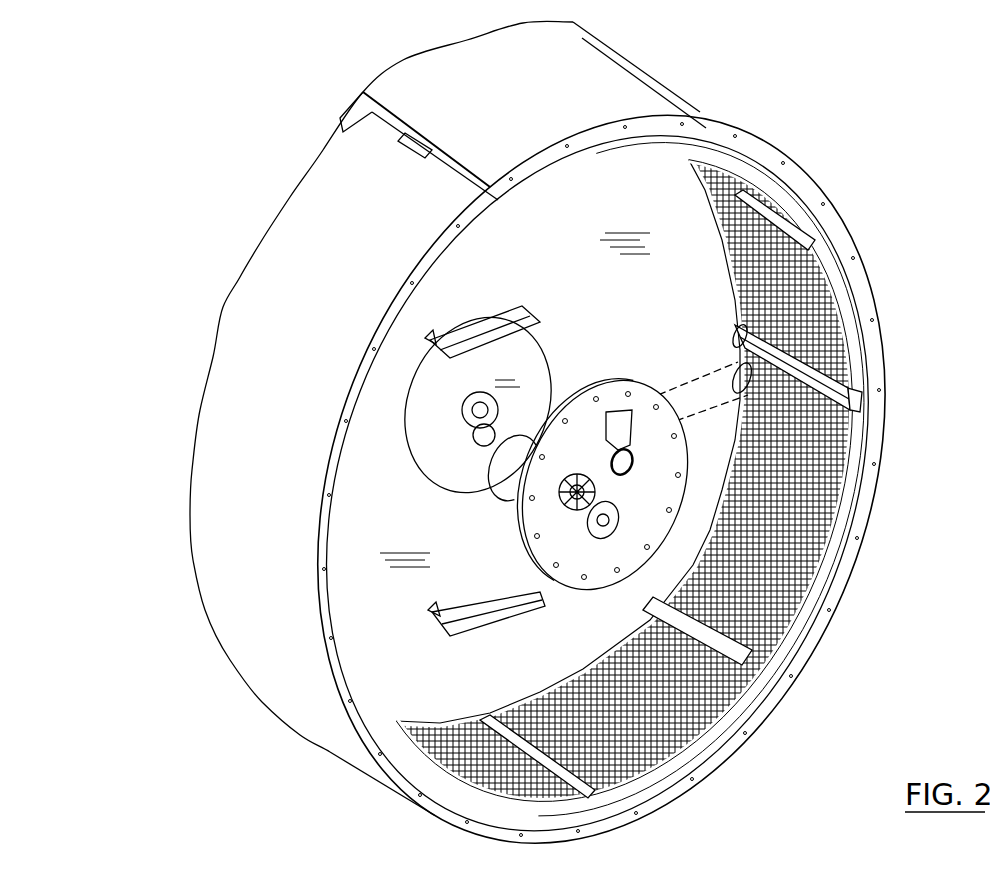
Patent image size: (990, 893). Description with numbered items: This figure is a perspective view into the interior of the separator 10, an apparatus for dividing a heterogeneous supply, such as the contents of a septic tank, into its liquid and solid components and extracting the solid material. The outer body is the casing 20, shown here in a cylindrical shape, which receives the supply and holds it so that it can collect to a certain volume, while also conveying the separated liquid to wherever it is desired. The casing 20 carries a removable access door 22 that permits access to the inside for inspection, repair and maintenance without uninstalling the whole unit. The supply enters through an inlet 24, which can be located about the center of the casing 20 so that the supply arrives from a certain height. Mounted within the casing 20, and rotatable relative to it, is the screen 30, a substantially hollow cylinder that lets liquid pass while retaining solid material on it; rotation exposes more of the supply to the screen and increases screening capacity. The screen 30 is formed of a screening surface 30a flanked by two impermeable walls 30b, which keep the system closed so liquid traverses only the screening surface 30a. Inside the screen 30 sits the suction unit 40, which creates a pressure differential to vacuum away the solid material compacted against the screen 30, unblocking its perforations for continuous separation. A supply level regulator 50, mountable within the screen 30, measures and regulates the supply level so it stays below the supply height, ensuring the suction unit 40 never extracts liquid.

The separator 10 is at (200, 108).
The casing 20 is at (245, 333).
The removable access door 22 is at (605, 70).
The inlet 24 is at (581, 528).
The screen 30 is at (816, 564).
The screening surface 30a is at (752, 660).
The impermeable walls 30b is at (627, 338).
The suction unit 40 is at (692, 343).
The supply level regulator 50 is at (500, 498).